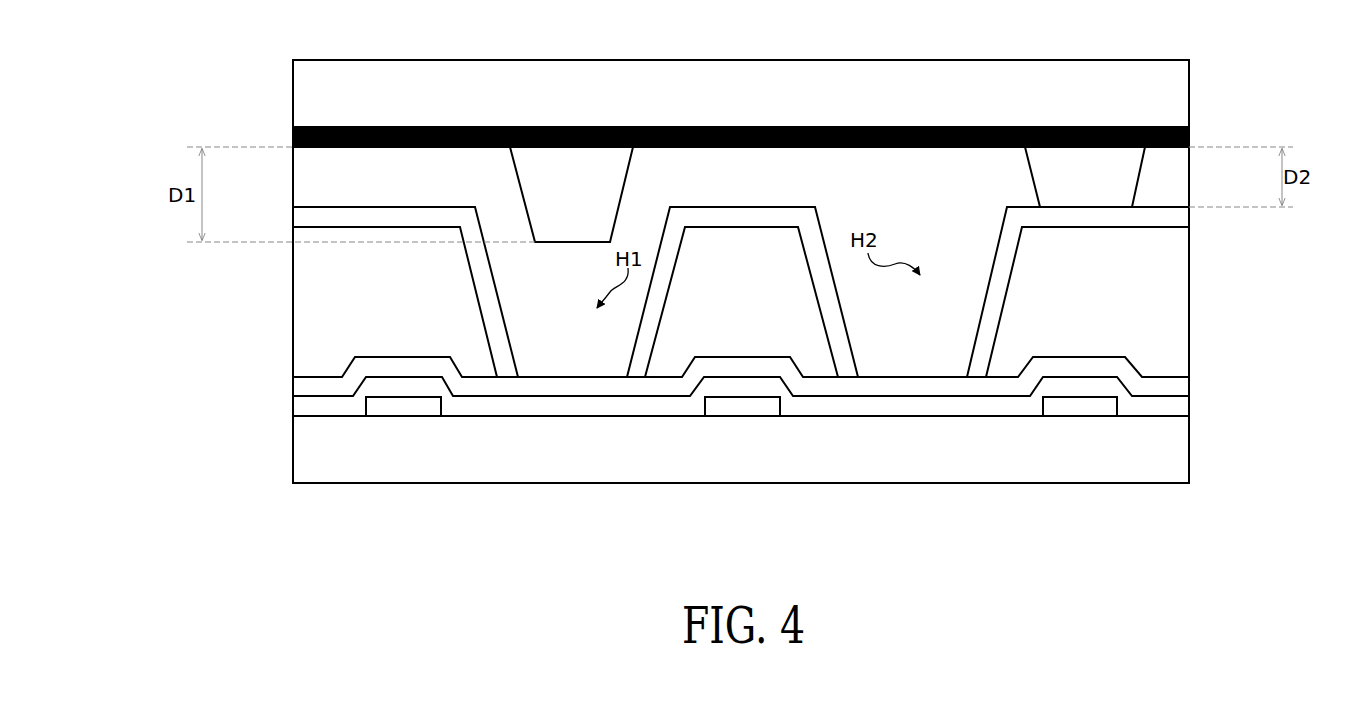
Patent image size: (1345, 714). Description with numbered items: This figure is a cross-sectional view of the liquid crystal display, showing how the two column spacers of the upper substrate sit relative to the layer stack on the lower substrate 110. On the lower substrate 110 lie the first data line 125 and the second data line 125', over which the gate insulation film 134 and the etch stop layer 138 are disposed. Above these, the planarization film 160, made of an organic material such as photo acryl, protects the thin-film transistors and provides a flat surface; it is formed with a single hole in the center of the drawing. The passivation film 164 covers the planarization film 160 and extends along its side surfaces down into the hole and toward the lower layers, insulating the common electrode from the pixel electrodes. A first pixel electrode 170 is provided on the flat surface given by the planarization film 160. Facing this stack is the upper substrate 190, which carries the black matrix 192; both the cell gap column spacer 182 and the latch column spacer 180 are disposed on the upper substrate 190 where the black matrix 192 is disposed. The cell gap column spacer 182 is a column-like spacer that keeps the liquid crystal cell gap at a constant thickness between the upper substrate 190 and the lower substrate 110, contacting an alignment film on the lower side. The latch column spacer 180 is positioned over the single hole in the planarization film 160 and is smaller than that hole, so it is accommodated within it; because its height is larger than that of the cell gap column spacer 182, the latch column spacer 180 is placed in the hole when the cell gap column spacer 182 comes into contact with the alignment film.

The lower substrate 110 is at (1163, 438).
The first data line 125 is at (403, 463).
The second data line 125' is at (742, 463).
The gate insulation film 134 is at (1163, 405).
The etch stop layer 138 is at (1163, 387).
The planarization film 160 is at (1163, 290).
The passivation film 164 is at (1165, 220).
The first pixel electrode 170 is at (1163, 178).
The latch column spacer 180 is at (570, 213).
The cell gap column spacer 182 is at (1070, 193).
The upper substrate 190 is at (1163, 115).
The black matrix 192 is at (1190, 133).